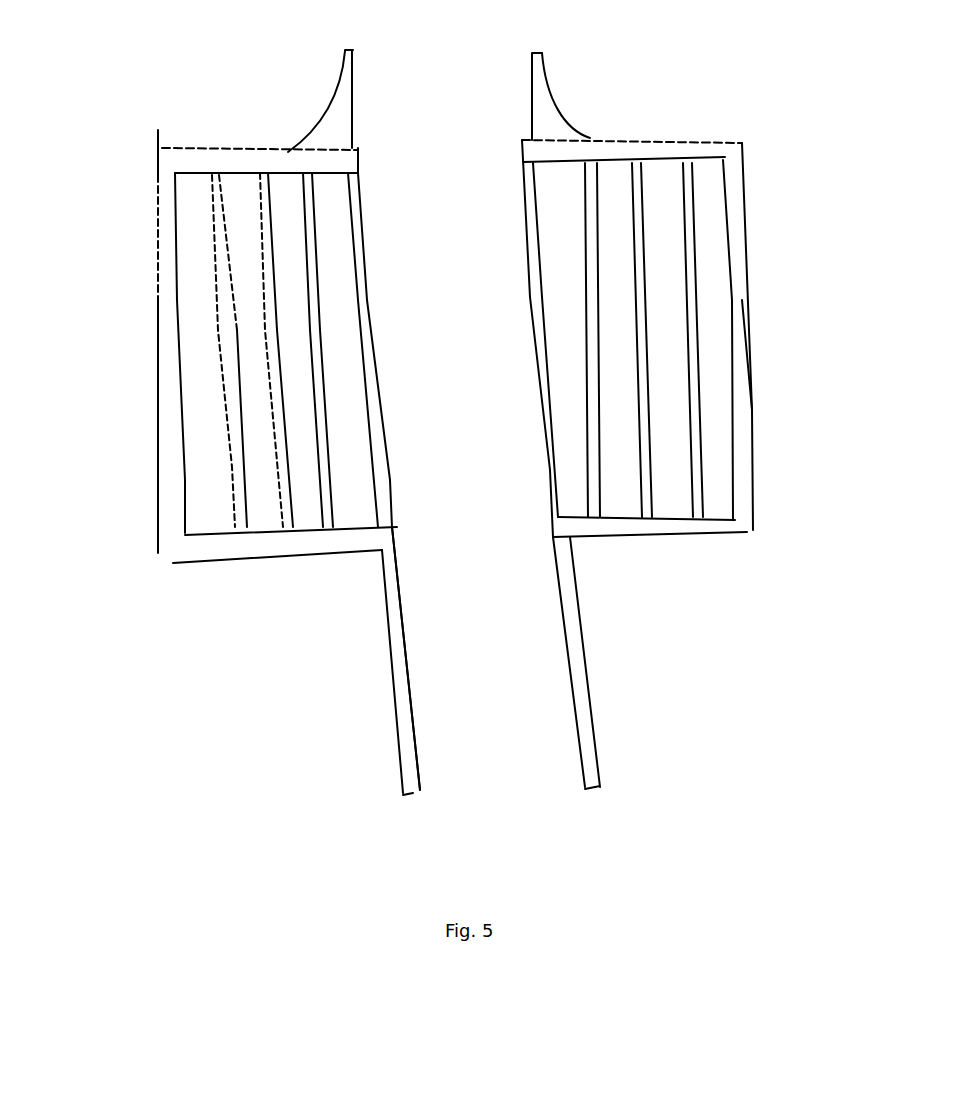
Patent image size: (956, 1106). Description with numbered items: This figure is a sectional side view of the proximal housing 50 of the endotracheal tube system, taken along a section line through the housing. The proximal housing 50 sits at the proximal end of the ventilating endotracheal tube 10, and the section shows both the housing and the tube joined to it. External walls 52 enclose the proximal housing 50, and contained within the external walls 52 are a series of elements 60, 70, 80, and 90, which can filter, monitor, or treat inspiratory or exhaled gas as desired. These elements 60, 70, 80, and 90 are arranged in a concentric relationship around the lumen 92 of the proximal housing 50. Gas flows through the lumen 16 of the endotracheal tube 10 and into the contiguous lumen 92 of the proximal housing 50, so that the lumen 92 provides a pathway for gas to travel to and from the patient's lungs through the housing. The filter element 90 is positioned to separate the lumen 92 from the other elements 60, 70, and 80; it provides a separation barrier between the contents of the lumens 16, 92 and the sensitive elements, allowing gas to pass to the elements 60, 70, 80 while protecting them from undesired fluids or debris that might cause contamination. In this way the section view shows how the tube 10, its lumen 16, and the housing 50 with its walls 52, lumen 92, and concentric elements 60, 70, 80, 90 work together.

The ventilating endotracheal tube 10 is at (583, 658).
The lumen 16 is at (428, 682).
The proximal housing 50 is at (715, 142).
The external walls 52 is at (158, 448).
The element 60 is at (213, 215).
The element 70 is at (265, 287).
The element 80 is at (313, 383).
The filter element 90 is at (377, 480).
The lumen 92 is at (433, 480).